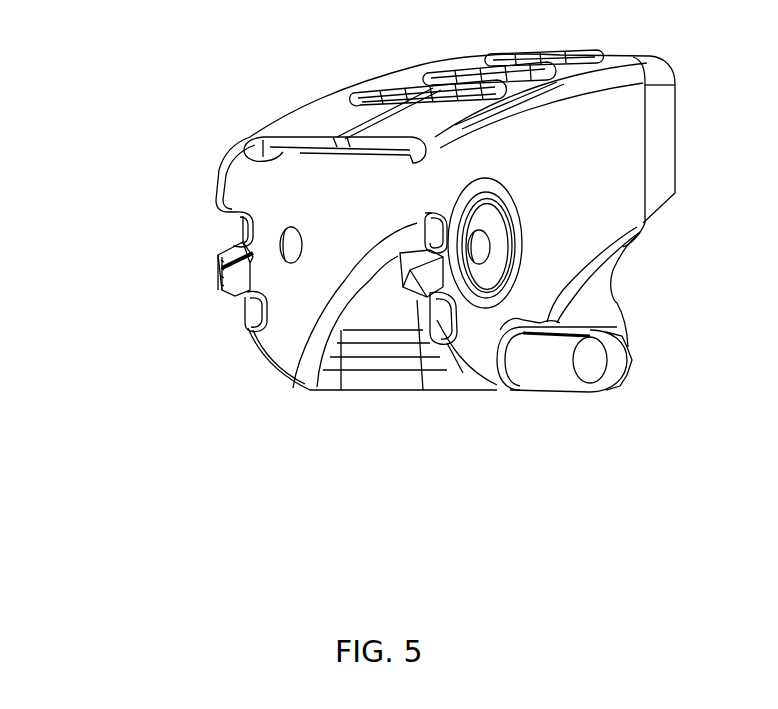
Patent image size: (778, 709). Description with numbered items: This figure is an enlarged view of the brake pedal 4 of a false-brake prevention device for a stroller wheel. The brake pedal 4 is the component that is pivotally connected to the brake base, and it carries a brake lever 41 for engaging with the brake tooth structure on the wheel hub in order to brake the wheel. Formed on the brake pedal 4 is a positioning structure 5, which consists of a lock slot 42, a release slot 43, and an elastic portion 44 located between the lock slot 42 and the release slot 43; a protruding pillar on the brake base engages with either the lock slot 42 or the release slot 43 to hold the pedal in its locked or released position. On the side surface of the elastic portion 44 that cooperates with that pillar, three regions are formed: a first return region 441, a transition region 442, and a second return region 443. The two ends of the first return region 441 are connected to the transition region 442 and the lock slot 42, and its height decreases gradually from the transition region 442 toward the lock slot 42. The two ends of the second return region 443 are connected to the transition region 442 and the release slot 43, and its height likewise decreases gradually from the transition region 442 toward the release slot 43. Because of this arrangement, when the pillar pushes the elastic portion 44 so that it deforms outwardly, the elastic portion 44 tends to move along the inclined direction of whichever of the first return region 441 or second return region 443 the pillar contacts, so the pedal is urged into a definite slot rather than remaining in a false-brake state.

The brake pedal 4 is at (675, 72).
The brake lever 41 is at (565, 355).
The lock slot 42 is at (250, 313).
The release slot 43 is at (237, 222).
The elastic portion 44 is at (246, 349).
The first return region 441 is at (230, 297).
The transition region 442 is at (228, 294).
The second return region 443 is at (222, 255).
The positioning structure 5 is at (45, 107).